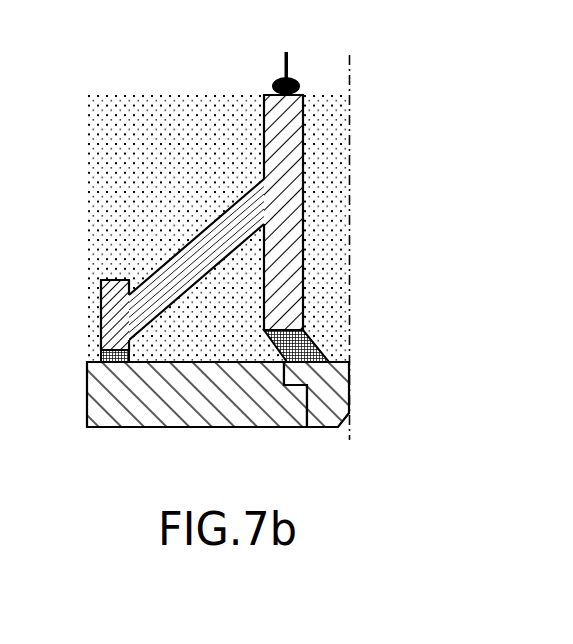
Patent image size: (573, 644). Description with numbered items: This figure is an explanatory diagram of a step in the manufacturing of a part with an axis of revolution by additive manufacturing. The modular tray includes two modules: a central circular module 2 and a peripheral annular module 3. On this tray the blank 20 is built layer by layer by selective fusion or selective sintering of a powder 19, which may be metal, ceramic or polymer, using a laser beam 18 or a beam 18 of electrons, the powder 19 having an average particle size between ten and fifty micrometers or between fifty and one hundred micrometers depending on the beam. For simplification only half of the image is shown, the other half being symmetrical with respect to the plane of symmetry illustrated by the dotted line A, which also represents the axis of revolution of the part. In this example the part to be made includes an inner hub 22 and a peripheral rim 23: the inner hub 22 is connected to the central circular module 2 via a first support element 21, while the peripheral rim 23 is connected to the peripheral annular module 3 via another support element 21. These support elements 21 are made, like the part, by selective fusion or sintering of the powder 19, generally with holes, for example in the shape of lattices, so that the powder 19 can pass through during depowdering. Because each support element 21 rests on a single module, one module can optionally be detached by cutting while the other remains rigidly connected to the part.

The central circular module 2 is at (321, 417).
The peripheral annular module 3 is at (188, 416).
The laser beam 18 is at (283, 60).
The powder 19 is at (155, 200).
The blank 20 is at (115, 302).
The support element 21 is at (317, 348).
The inner hub 22 is at (283, 261).
The peripheral rim 23 is at (106, 333).
The dotted line A is at (352, 163).